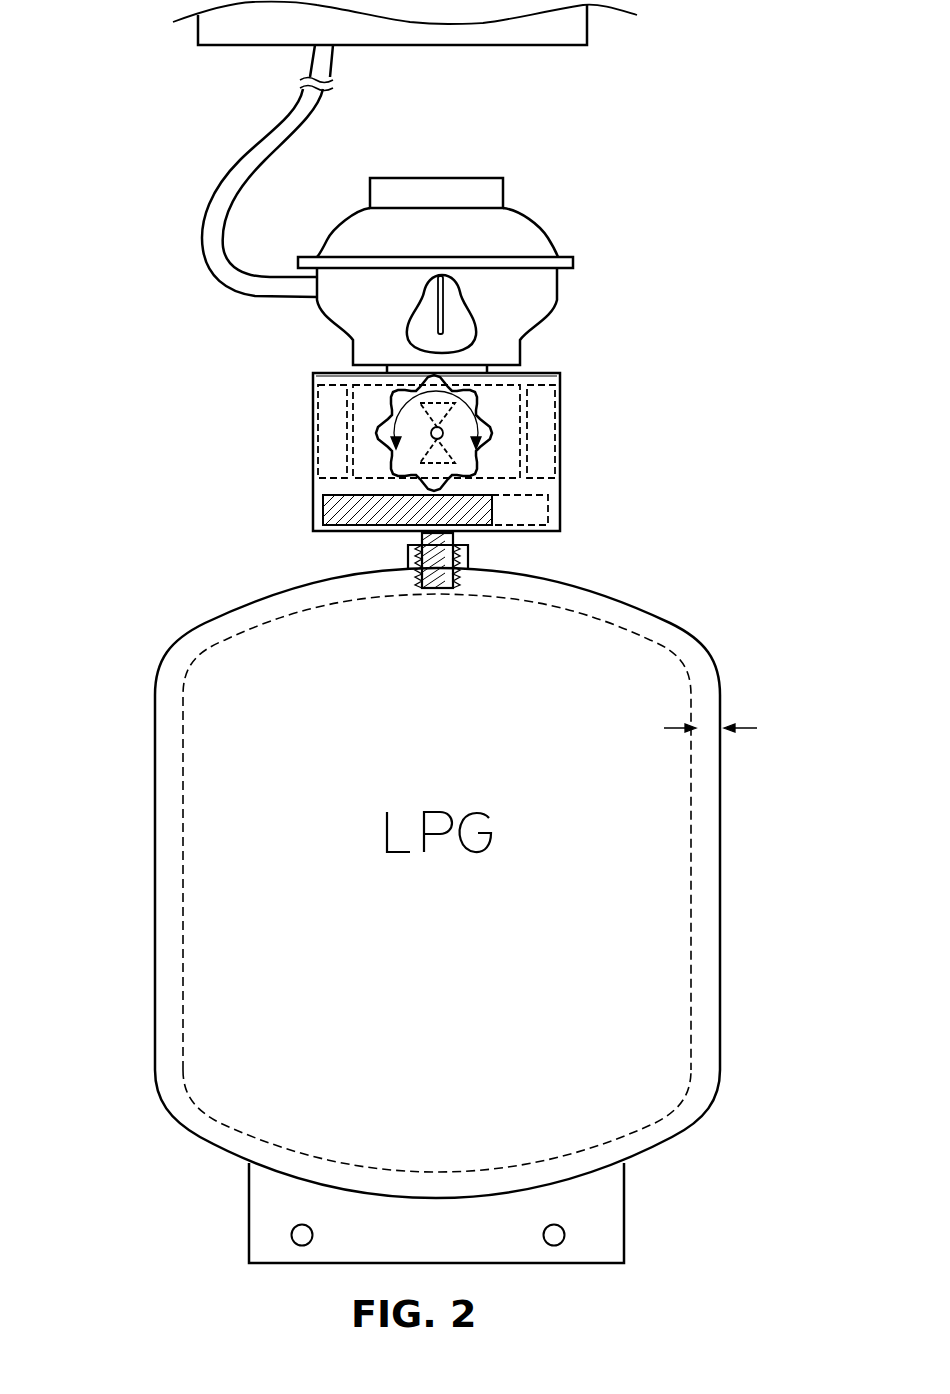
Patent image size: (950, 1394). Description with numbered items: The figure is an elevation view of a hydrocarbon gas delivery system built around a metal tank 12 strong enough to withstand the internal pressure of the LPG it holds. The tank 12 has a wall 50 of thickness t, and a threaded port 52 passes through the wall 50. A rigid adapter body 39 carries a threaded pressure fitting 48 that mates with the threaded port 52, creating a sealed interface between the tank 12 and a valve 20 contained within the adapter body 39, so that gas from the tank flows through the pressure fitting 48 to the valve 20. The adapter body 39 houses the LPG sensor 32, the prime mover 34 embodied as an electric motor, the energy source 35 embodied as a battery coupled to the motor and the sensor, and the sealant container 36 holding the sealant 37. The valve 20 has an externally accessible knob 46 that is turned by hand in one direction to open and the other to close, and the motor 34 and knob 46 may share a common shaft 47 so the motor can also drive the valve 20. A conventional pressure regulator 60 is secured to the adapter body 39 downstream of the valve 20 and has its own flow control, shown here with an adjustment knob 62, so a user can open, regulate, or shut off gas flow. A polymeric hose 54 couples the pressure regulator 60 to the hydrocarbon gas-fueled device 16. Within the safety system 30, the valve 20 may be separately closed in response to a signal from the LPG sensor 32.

The tank 12 is at (721, 806).
The hydrocarbon gas-fueled device 16 is at (590, 28).
The valve 20 is at (437, 403).
The safety system 30 is at (580, 393).
The LPG sensor 32 is at (318, 407).
The prime mover 34 is at (520, 433).
The energy source 35 is at (555, 458).
The sealant container 36 is at (549, 507).
The sealant 37 is at (327, 507).
The rigid adapter body 39 is at (325, 373).
The knob 46 is at (485, 403).
The common shaft 47 is at (423, 435).
The threaded pressure fitting 48 is at (445, 591).
The wall 50 is at (637, 598).
The port 52 is at (403, 613).
The polymeric hose 54 is at (322, 98).
The pressure regulator 60 is at (531, 215).
The regulator adjustment knob 62 is at (465, 310).